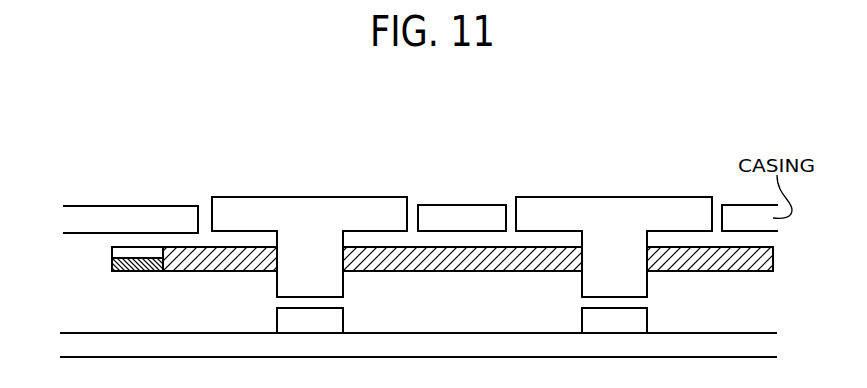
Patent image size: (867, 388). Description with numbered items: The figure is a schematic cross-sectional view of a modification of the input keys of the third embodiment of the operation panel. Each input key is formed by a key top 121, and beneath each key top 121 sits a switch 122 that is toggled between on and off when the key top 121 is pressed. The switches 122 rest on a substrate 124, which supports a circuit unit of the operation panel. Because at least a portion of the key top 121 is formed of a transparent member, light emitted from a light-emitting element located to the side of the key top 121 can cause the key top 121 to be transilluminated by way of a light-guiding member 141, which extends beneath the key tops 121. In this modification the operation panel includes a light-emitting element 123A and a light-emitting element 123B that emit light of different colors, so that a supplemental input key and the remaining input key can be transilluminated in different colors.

The key top 121 is at (320, 196).
The switch 122 is at (343, 323).
The light-emitting element 123A is at (112, 253).
The light-emitting element 123B is at (112, 265).
The substrate 124 is at (768, 343).
The light-guiding member 141 is at (775, 256).